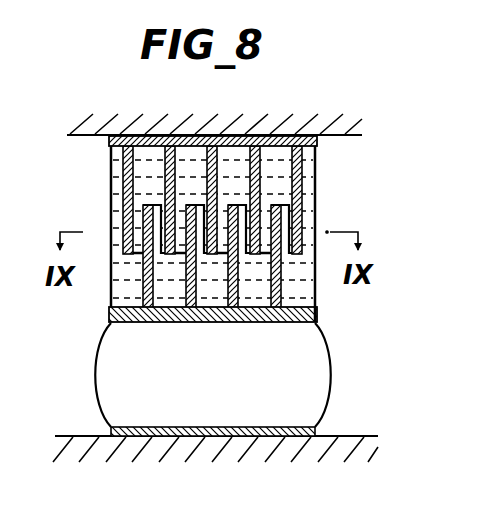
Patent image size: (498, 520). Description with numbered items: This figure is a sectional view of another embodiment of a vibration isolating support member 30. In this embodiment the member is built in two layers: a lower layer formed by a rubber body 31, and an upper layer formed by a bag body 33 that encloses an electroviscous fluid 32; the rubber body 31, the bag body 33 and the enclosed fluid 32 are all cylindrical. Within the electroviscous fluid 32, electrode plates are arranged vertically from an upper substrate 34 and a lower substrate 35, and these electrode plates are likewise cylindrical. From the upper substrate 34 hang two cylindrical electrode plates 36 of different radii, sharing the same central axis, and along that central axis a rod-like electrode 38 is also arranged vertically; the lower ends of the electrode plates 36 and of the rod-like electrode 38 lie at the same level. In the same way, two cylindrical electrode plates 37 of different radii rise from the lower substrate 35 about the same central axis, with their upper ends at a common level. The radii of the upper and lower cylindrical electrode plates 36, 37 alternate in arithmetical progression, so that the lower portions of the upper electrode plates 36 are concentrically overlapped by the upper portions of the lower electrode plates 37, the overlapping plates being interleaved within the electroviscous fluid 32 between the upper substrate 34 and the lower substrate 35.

The vibration isolating support member 30 is at (364, 212).
The rubber body 31 is at (92, 373).
The electroviscous fluid 32 is at (127, 278).
The bag body 33 is at (110, 192).
The upper substrate 34 is at (317, 139).
The lower substrate 35 is at (318, 318).
The upper electrode plates 36 is at (262, 168).
The lower electrode plates 37 is at (285, 295).
The rod-like electrode 38 is at (207, 160).